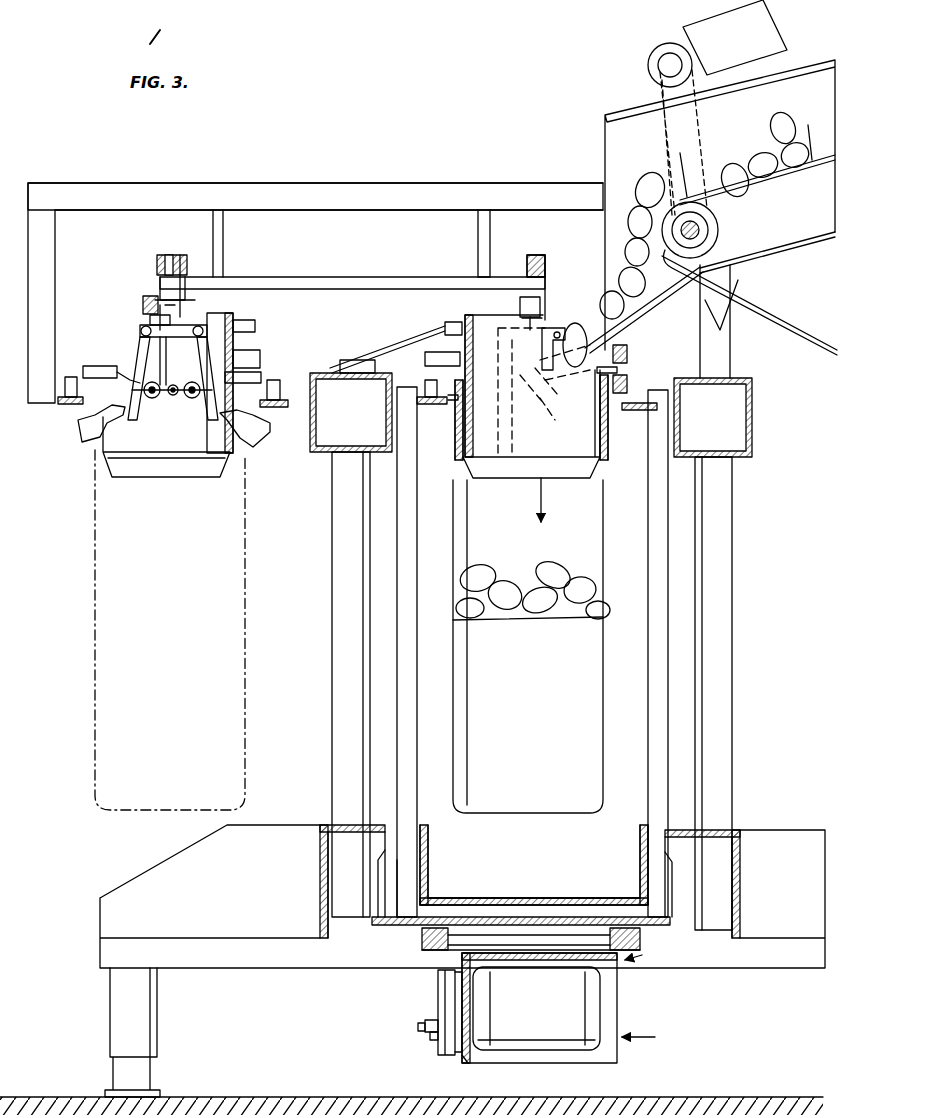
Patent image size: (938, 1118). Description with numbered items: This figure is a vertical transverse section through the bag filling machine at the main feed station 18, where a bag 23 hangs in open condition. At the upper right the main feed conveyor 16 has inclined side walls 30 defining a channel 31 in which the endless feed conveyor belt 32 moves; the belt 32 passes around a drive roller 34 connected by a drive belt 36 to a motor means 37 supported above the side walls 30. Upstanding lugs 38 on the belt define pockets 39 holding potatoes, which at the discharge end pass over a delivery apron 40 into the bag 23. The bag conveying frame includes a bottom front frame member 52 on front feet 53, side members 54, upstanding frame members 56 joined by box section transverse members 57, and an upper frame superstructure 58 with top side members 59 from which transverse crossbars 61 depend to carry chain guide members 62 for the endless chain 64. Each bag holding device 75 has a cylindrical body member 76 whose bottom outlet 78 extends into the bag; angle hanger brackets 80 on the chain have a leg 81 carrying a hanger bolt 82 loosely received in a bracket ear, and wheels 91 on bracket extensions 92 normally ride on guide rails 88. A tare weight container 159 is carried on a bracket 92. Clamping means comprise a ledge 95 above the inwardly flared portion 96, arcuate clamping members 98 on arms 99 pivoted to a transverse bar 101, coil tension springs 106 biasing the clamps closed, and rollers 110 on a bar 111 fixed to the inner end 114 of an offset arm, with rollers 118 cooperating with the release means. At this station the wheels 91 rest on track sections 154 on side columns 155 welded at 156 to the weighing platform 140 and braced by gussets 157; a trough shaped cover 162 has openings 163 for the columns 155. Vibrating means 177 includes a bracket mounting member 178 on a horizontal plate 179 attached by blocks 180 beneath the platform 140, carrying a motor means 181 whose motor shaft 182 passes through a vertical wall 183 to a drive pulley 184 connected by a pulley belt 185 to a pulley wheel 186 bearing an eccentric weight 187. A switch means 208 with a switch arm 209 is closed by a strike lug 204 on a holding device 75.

The main feed conveyor 16 is at (698, 189).
The main feed station 18 is at (575, 290).
The bag 23 is at (95, 626).
The side walls 30 is at (804, 62).
The channel 31 is at (757, 147).
The feed conveyor belt 32 is at (780, 318).
The drive roller 34 is at (720, 230).
The drive belt 36 is at (655, 152).
The motor means 37 is at (695, 28).
The lugs 38 is at (680, 178).
The pockets 39 is at (800, 130).
The delivery apron 40 is at (622, 328).
The bottom front frame member 52 is at (320, 914).
The front feet 53 is at (140, 1024).
The side members 54 is at (185, 862).
The upstanding frame members 56 is at (332, 670).
The transverse members 57 is at (745, 458).
The upper frame superstructure 58 is at (445, 182).
The top side members 59 is at (250, 192).
The transverse crossbars 61 is at (370, 280).
The chain guide members 62 is at (190, 262).
The endless chain 64 is at (165, 253).
The bag holding device 75 is at (366, 355).
The cylindrical body member 76 is at (205, 318).
The outlet 78 is at (550, 480).
The hanger brackets 80 is at (160, 282).
The leg 81 is at (182, 295).
The hanger bolt 82 is at (520, 305).
The guide rails 88 is at (60, 402).
The wheels 91 is at (70, 376).
The bracket extensions 92 is at (100, 370).
The ledge 95 is at (170, 455).
The inwardly flared portion 96 is at (190, 466).
The clamping members 98 is at (80, 430).
The arms 99 is at (140, 380).
The transverse bar 101 is at (150, 320).
The coil tension spring 106 is at (170, 398).
The rollers 110 is at (148, 400).
The bar 111 is at (164, 380).
The inner end 114 is at (140, 345).
The rollers 118 is at (145, 298).
The weighing platform 140 is at (510, 917).
The track sections 154 is at (456, 420).
The side columns 155 is at (405, 712).
The weld 156 is at (425, 905).
The gussets 157 is at (385, 886).
The container 159 is at (258, 356).
The cover 162 is at (622, 898).
The openings 163 is at (420, 836).
The vibrating means 177 is at (656, 1037).
The bracket mounting member 178 is at (617, 1004).
The horizontal plate 179 is at (650, 965).
The blocks 180 is at (425, 938).
The motor means 181 is at (528, 1032).
The motor shaft 182 is at (455, 1008).
The vertical wall 183 is at (465, 1065).
The drive pulley 184 is at (438, 996).
The pulley belt 185 is at (425, 1026).
The pulley wheel 186 is at (436, 1042).
The eccentric weight 187 is at (425, 1034).
The strike lug 204 is at (250, 322).
The switch means 208 is at (350, 360).
The switch arm 209 is at (415, 340).